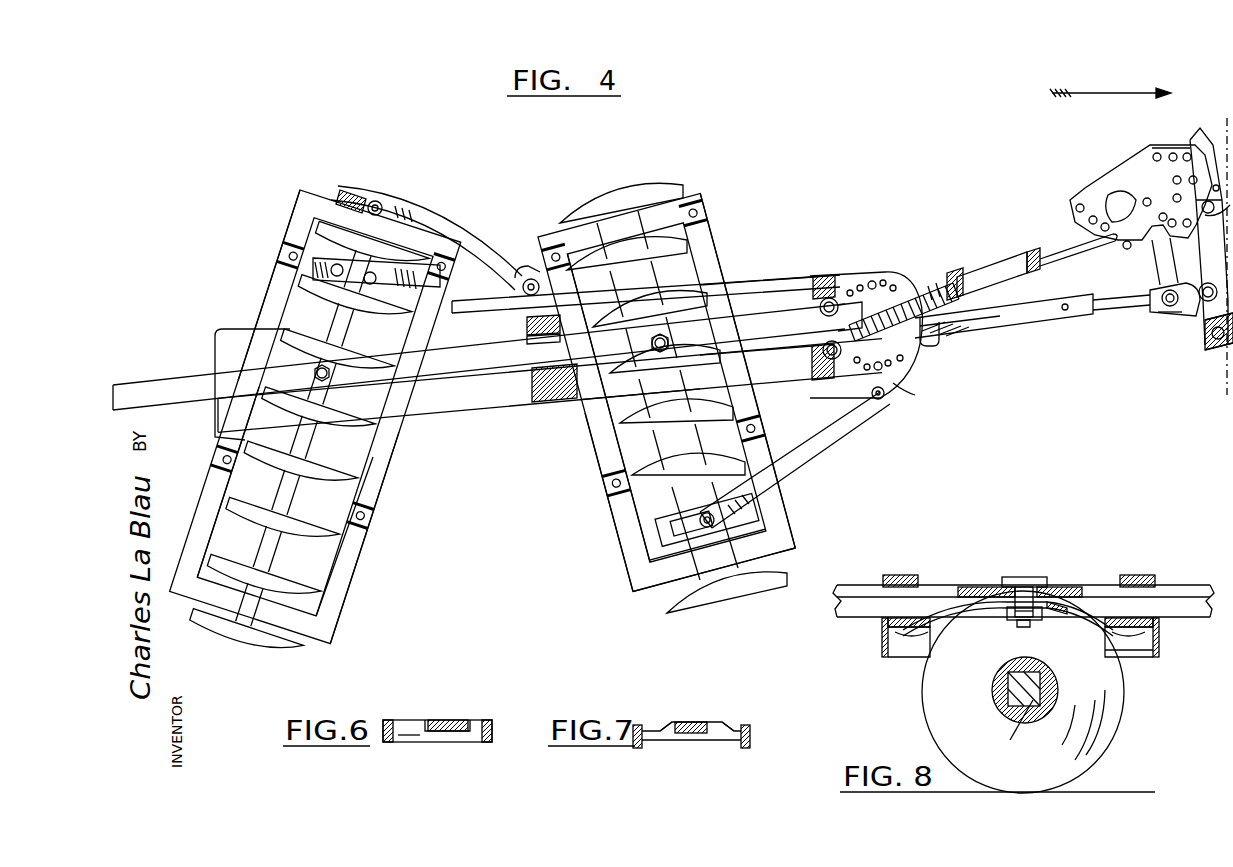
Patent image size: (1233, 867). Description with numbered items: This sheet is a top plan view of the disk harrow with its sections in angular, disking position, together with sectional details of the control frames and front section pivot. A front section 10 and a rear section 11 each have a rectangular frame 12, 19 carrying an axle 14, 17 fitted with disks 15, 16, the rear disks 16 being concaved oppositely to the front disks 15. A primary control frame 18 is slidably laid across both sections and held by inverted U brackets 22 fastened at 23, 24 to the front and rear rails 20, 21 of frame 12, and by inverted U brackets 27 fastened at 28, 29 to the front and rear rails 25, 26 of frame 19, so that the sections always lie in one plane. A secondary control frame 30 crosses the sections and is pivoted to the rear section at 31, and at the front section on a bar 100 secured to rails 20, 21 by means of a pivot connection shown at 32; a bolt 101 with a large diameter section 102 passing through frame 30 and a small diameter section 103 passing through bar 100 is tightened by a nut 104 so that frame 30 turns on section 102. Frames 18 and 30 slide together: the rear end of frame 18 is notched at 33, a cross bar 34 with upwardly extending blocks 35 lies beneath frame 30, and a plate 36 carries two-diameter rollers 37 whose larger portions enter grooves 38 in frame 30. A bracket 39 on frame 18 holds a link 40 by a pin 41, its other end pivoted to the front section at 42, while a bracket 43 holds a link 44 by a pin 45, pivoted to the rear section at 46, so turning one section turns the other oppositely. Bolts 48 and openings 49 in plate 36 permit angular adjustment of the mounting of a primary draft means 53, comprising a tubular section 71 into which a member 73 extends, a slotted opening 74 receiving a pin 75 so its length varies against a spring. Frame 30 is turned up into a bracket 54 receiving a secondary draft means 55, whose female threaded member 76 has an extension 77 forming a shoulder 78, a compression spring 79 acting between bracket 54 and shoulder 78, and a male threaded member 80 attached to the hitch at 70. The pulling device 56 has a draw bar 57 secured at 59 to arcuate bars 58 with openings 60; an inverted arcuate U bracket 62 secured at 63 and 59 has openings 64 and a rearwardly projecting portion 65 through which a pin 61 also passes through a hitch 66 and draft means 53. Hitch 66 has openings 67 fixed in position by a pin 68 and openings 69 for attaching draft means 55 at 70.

In FIG. 4, the front section 10 is at (760, 428).
In FIG. 4, the rear section 11 is at (362, 546).
In FIG. 4, the rectangular frame 12 is at (772, 500).
In FIG. 8, the rectangular frame 12 is at (1140, 652).
In FIG. 4, the axle 14 is at (677, 440).
In FIG. 4, the disks 15 is at (705, 603).
In FIG. 4, the disks 16 is at (210, 621).
In FIG. 4, the axle 17 is at (263, 535).
In FIG. 4, the primary control frame 18 is at (447, 418).
In FIG. 6, the primary control frame 18 is at (487, 724).
In FIG. 7, the primary control frame 18 is at (748, 728).
In FIG. 8, the primary control frame 18 is at (848, 584).
In FIG. 4, the rectangular frame 19 is at (354, 577).
In FIG. 4, the front rail 20 is at (775, 523).
In FIG. 8, the front rail 20 is at (1160, 640).
In FIG. 4, the rear rail 21 is at (614, 512).
In FIG. 8, the rear rail 21 is at (882, 640).
In FIG. 4, the inverted U bracket 22 is at (704, 258).
In FIG. 8, the inverted U bracket 22 is at (900, 574).
In FIG. 4, the securing point 23 is at (698, 208).
In FIG. 4, the securing point 24 is at (550, 252).
In FIG. 4, the front rail 25 is at (342, 602).
In FIG. 4, the rear rail 26 is at (199, 538).
In FIG. 4, the inverted U bracket 27 is at (276, 284).
In FIG. 4, the securing point 28 is at (449, 262).
In FIG. 4, the securing point 29 is at (290, 255).
In FIG. 4, the secondary control frame 30 is at (135, 385).
In FIG. 6, the secondary control frame 30 is at (442, 722).
In FIG. 7, the secondary control frame 30 is at (690, 720).
In FIG. 8, the secondary control frame 30 is at (948, 585).
In FIG. 4, the pivotal connection 31 is at (331, 373).
In FIG. 4, the pivot nut 32 is at (651, 345).
In FIG. 4, the notch 33 is at (214, 362).
In FIG. 6, the notch 33 is at (438, 743).
In FIG. 4, the cross bar 34 is at (526, 323).
In FIG. 7, the cross bar 34 is at (710, 742).
In FIG. 4, the upwardly extending blocks 35 is at (527, 340).
In FIG. 7, the upwardly extending blocks 35 is at (662, 727).
In FIG. 4, the plate 36 is at (856, 287).
In FIG. 4, the rollers 37 is at (820, 306).
In FIG. 4, the grooves 38 is at (758, 287).
In FIG. 4, the bracket 39 is at (886, 392).
In FIG. 4, the link 40 is at (848, 414).
In FIG. 4, the pin 41 is at (890, 398).
In FIG. 4, the pivotal connection 42 is at (703, 528).
In FIG. 4, the bracket 43 is at (528, 278).
In FIG. 4, the link 44 is at (420, 225).
In FIG. 4, the pin 45 is at (518, 299).
In FIG. 4, the pivotal connection 46 is at (375, 200).
In FIG. 4, the bolts 48 is at (872, 281).
In FIG. 4, the openings 49 is at (849, 290).
In FIG. 4, the primary draft means 53 is at (1030, 326).
In FIG. 4, the bracket 54 is at (846, 325).
In FIG. 4, the secondary draft means 55 is at (990, 280).
In FIG. 4, the pulling device 56 is at (1226, 372).
In FIG. 4, the draw bar 57 is at (1217, 275).
In FIG. 4, the arcuate bars 58 is at (1220, 350).
In FIG. 4, the securing point 59 is at (1203, 300).
In FIG. 4, the openings 60 is at (1214, 183).
In FIG. 4, the pin 61 is at (1163, 304).
In FIG. 4, the inverted arcuate U bracket 62 is at (1195, 270).
In FIG. 4, the securing point 63 is at (1212, 336).
In FIG. 4, the openings 64 is at (1215, 185).
In FIG. 4, the rearwardly projecting portion 65 is at (1170, 312).
In FIG. 4, the hitch 66 is at (1140, 170).
In FIG. 4, the openings 67 is at (1155, 152).
In FIG. 4, the pin 68 is at (1108, 180).
In FIG. 4, the openings 69 is at (1076, 206).
In FIG. 4, the connection point 70 is at (1122, 248).
In FIG. 4, the tubular section 71 is at (997, 330).
In FIG. 4, the member 73 is at (1152, 297).
In FIG. 4, the slotted opening 74 is at (1112, 310).
In FIG. 4, the pin 75 is at (1066, 312).
In FIG. 4, the female threaded member 76 is at (1010, 280).
In FIG. 4, the extension 77 is at (939, 288).
In FIG. 4, the shoulder 78 is at (958, 272).
In FIG. 4, the compression spring 79 is at (926, 290).
In FIG. 4, the male threaded member 80 is at (1064, 260).
In FIG. 4, the bar 100 is at (598, 401).
In FIG. 8, the bar 100 is at (1095, 622).
In FIG. 4, the bolt 101 is at (669, 343).
In FIG. 8, the bolt 101 is at (1022, 628).
In FIG. 8, the large diameter section 102 is at (1025, 590).
In FIG. 8, the small diameter section 103 is at (1016, 612).
In FIG. 8, the nut 104 is at (1040, 620).